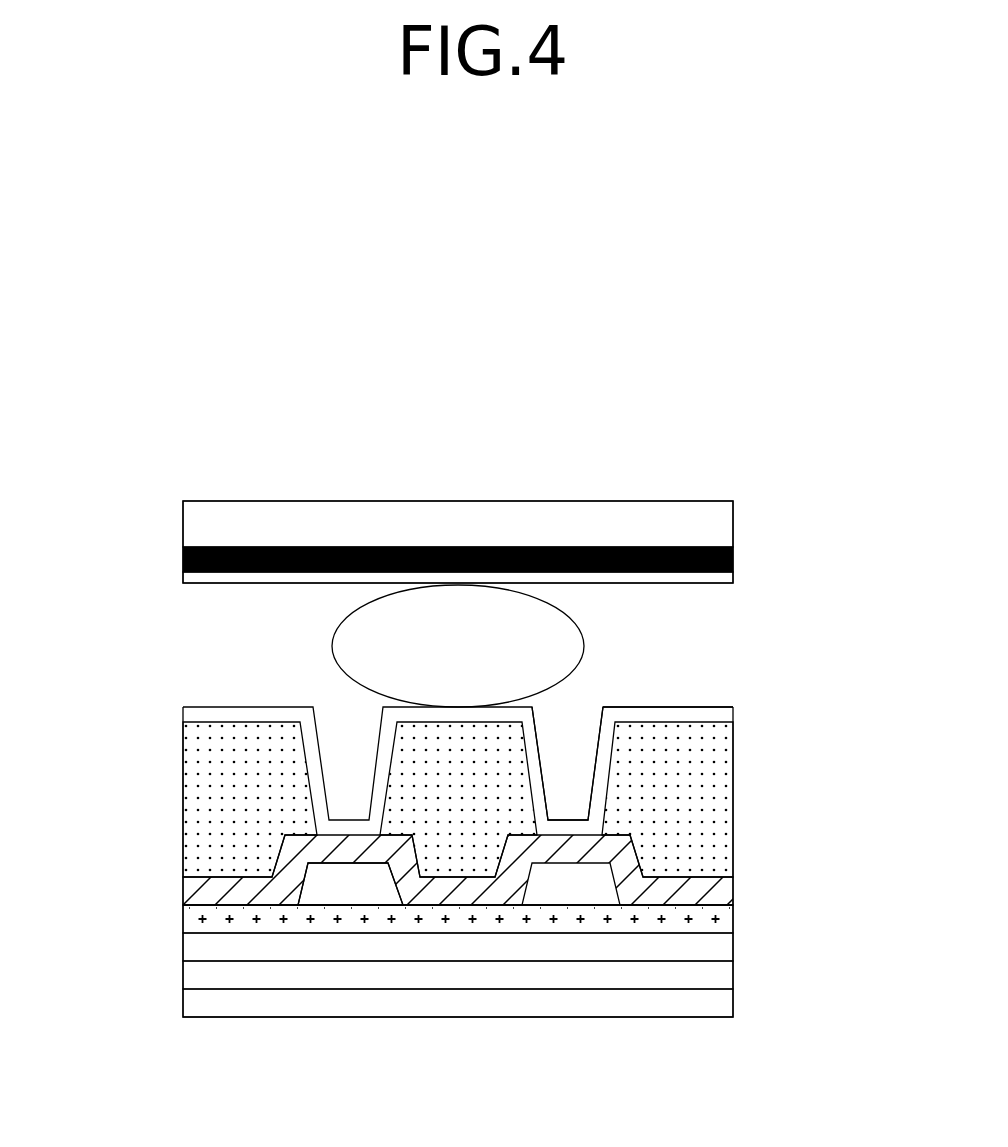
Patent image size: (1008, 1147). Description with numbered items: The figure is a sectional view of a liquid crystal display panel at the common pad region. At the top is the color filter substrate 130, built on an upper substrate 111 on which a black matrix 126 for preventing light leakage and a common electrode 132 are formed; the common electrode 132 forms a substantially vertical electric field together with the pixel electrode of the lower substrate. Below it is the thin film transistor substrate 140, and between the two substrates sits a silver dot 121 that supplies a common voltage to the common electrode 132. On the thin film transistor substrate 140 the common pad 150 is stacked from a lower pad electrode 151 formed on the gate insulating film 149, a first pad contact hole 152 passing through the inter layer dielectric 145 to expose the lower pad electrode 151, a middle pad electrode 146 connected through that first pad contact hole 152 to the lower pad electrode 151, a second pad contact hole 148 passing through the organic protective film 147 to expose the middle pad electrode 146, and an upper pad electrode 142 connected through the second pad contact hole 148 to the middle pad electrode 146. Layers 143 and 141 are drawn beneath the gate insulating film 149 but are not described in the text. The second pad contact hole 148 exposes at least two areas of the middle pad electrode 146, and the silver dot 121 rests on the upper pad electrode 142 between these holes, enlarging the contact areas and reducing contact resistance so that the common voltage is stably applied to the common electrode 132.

The color filter substrate 130 is at (158, 538).
The upper substrate 111 is at (735, 520).
The black matrix 126 is at (735, 549).
The common electrode 132 is at (735, 578).
The silver dot 121 is at (332, 648).
The thin film transistor substrate 140 is at (158, 737).
The upper pad electrode 142 is at (735, 713).
The organic protective film 147 is at (735, 810).
The second pad contact hole 148 is at (567, 800).
The common pad 150 is at (620, 684).
The middle pad electrode 146 is at (655, 898).
The inter layer dielectric 145 is at (325, 893).
The lower pad electrode 151 is at (528, 920).
The first pad contact hole 152 is at (443, 916).
The gate insulating film 149 is at (735, 940).
The intermediate layer 143 is at (735, 970).
The lower substrate base 141 is at (735, 1000).